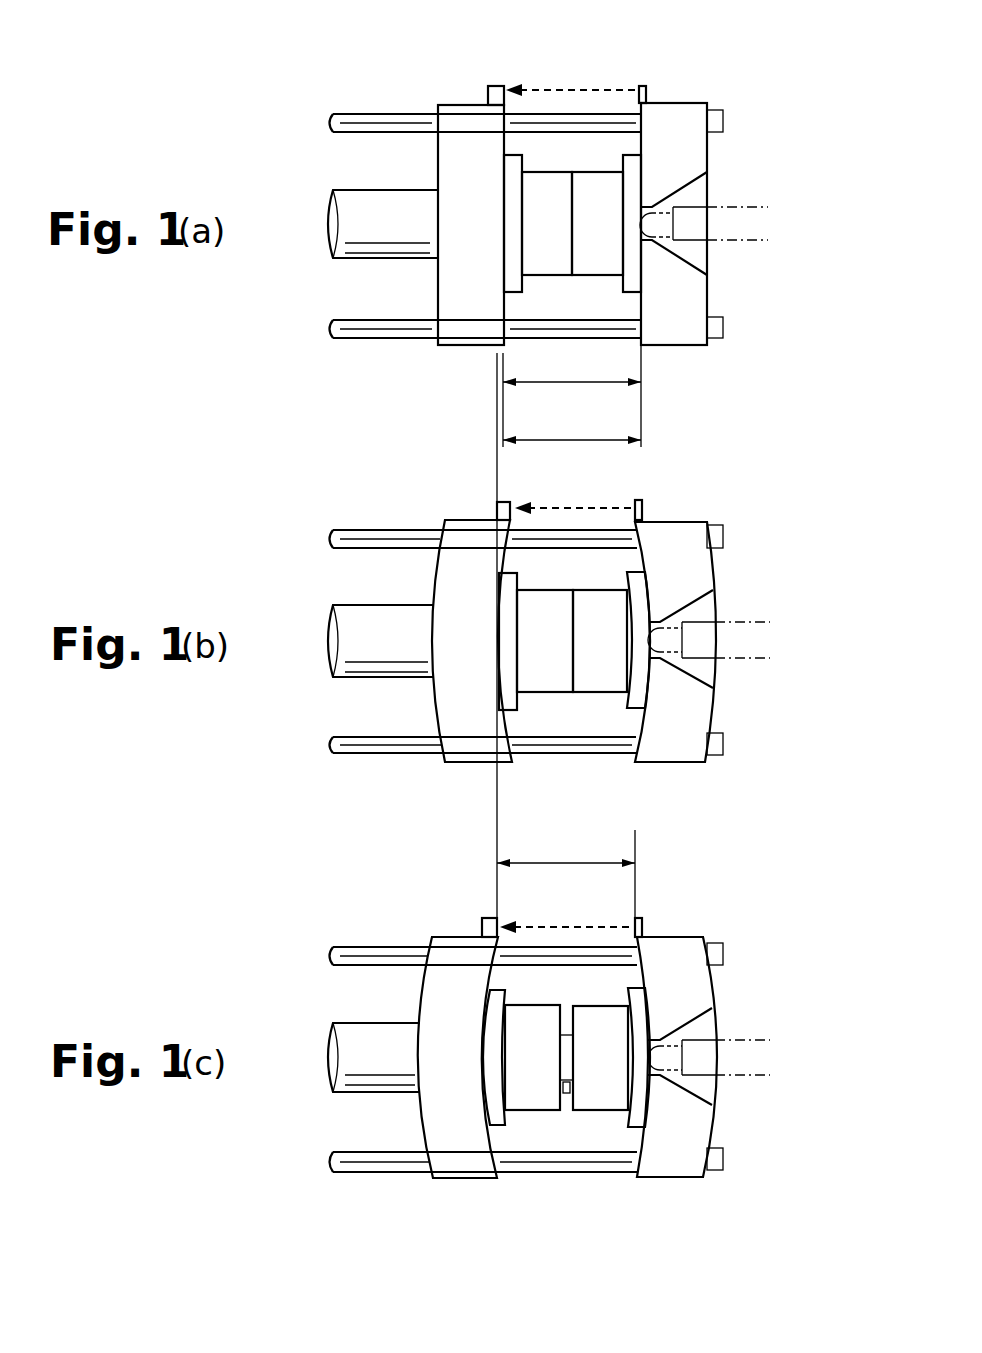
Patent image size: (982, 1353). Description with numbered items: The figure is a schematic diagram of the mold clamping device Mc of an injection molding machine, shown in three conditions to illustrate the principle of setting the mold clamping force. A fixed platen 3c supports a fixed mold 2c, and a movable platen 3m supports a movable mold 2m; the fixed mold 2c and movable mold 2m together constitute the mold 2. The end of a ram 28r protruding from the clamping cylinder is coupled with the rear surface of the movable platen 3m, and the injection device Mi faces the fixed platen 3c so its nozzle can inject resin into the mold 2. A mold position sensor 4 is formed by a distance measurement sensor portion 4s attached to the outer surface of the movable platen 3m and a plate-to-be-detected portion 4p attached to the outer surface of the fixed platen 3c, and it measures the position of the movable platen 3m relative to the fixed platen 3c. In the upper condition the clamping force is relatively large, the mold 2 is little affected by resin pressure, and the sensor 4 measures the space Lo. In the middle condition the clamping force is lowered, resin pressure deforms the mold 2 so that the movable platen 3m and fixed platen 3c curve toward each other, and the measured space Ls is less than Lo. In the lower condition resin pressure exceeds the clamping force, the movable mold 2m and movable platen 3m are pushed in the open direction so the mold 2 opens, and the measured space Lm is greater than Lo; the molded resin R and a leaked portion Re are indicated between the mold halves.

In FIG. 1A, the mold 2 is at (605, 256).
In FIG. 1B, the mold 2 is at (599, 672).
In FIG. 1C, the mold 2 is at (635, 1109).
In FIG. 1A, the movable mold 2m is at (546, 172).
In FIG. 1B, the movable mold 2m is at (546, 590).
In FIG. 1C, the movable mold 2m is at (531, 1005).
In FIG. 1A, the fixed mold 2c is at (600, 172).
In FIG. 1B, the fixed mold 2c is at (600, 590).
In FIG. 1C, the fixed mold 2c is at (600, 1006).
In FIG. 1A, the movable platen 3m is at (455, 105).
In FIG. 1B, the movable platen 3m is at (448, 520).
In FIG. 1C, the movable platen 3m is at (455, 1180).
In FIG. 1A, the fixed platen 3c is at (707, 292).
In FIG. 1B, the fixed platen 3c is at (712, 703).
In FIG. 1C, the fixed platen 3c is at (712, 1125).
In FIG. 1A, the mold position sensor 4 is at (520, 53).
In FIG. 1B, the mold position sensor 4 is at (567, 469).
In FIG. 1C, the mold position sensor 4 is at (565, 888).
In FIG. 1A, the distance measurement sensor portion 4s is at (490, 86).
In FIG. 1B, the distance measurement sensor portion 4s is at (500, 502).
In FIG. 1C, the distance measurement sensor portion 4s is at (481, 918).
In FIG. 1A, the plate-to-be-detected portion 4p is at (642, 86).
In FIG. 1B, the plate-to-be-detected portion 4p is at (641, 500).
In FIG. 1C, the plate-to-be-detected portion 4p is at (641, 918).
In FIG. 1A, the ram 28r is at (412, 190).
In FIG. 1B, the ram 28r is at (380, 641).
In FIG. 1C, the ram 28r is at (374, 1057).
In FIG. 1A, the mold clamping device Mc is at (730, 66).
In FIG. 1A, the injection device Mi is at (758, 198).
In FIG. 1B, the injection device Mi is at (709, 640).
In FIG. 1C, the injection device Mi is at (709, 1057).
In FIG. 1C, the molded product (resin) R is at (577, 1050).
In FIG. 1C, the resin leak (flash) Re is at (565, 1097).
In FIG. 1A, the space between movable platen and fixed platen Lo is at (572, 369).
In FIG. 1A, the space between movable platen and fixed platen Ls is at (572, 425).
In FIG. 1C, the space between movable platen and fixed platen Lm is at (566, 851).